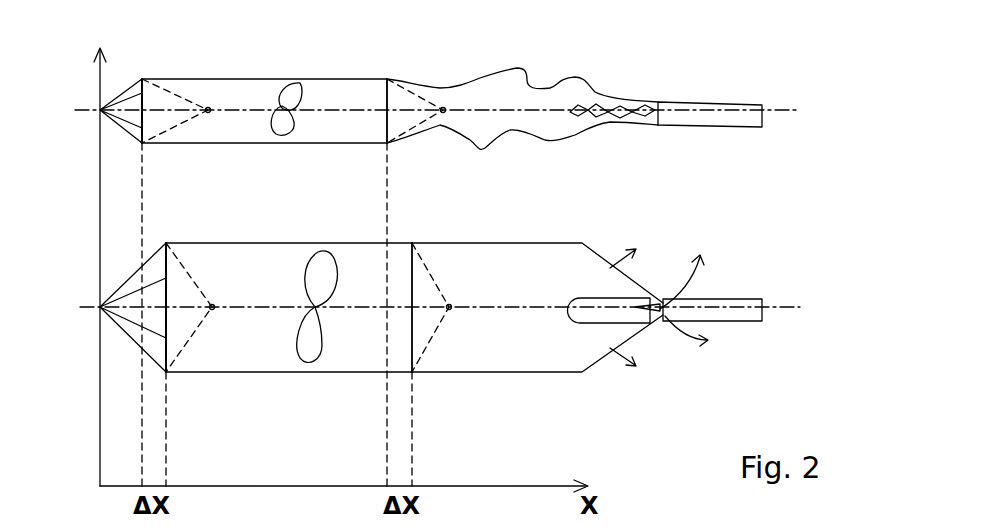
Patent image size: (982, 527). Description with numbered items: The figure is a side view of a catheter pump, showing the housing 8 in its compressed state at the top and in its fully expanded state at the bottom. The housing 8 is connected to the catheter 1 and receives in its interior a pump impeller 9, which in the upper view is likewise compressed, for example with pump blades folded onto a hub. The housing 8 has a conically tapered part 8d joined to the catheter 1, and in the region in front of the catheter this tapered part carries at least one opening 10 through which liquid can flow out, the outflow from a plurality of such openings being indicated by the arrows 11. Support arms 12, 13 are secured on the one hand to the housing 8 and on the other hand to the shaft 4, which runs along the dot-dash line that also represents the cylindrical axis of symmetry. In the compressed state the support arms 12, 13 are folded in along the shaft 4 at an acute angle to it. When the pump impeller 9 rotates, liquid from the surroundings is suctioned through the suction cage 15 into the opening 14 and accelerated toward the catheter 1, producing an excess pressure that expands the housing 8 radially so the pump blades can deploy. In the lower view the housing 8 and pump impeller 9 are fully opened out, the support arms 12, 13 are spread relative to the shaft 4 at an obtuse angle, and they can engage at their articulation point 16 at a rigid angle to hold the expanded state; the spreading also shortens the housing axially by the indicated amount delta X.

The catheter 1 is at (702, 100).
The shaft 4 is at (250, 113).
The housing 8 is at (270, 79).
The conically tapered part 8d is at (597, 90).
The pump impeller 9 is at (303, 80).
The opening 10 is at (614, 112).
The arrows 11 is at (688, 283).
The support arm 12 is at (185, 92).
The support arm 13 is at (175, 127).
The opening 14 is at (143, 108).
The suction cage 15 is at (115, 130).
The articulation point 16 is at (212, 307).